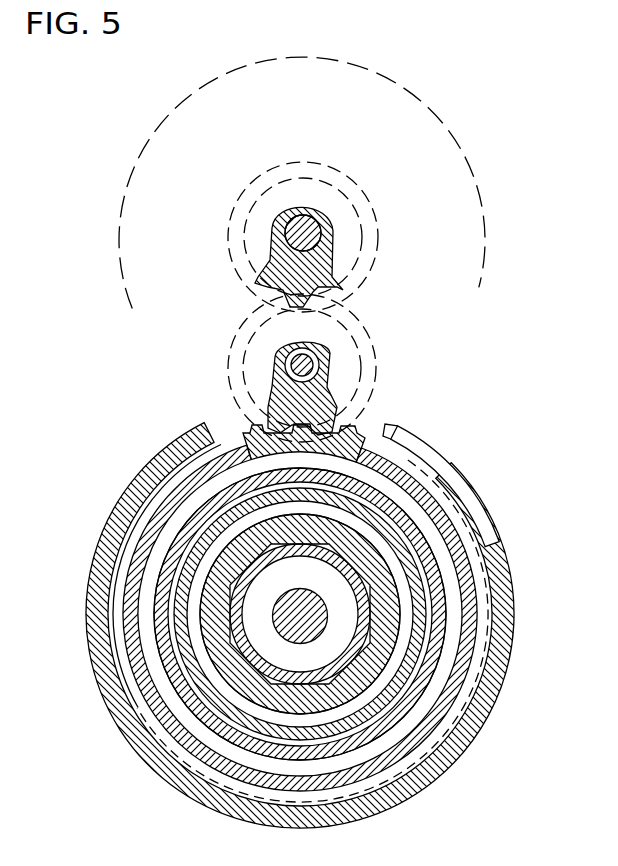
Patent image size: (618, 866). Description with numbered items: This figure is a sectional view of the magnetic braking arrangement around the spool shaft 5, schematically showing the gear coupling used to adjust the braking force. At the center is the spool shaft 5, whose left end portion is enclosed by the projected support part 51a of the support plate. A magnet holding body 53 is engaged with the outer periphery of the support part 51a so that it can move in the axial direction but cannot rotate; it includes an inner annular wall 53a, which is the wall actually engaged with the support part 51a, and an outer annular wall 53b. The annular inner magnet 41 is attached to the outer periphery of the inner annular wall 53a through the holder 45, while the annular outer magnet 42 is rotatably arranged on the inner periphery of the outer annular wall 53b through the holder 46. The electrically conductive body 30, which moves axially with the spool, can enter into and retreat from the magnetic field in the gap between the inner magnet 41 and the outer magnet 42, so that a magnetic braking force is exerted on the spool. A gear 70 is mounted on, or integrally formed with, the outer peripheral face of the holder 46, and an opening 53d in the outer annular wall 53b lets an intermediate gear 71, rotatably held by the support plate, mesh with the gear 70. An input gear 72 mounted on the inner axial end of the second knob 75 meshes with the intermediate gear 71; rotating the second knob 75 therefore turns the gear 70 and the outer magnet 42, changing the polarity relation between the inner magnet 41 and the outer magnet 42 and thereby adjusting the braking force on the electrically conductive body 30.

The spool shaft 5 is at (312, 623).
The electrically conductive body 30 is at (193, 535).
The inner magnet 41 is at (187, 573).
The outer magnet 42 is at (193, 499).
The holder 45 is at (198, 593).
The holder 46 is at (183, 505).
The support part 51a is at (243, 653).
The magnet holding body 53 is at (508, 545).
The inner annular wall 53a is at (219, 632).
The outer annular wall 53b is at (450, 470).
The opening 53d is at (397, 430).
The gear 70 is at (243, 432).
The intermediate gear 71 is at (328, 380).
The input gear 72 is at (332, 253).
The second knob 75 is at (433, 105).